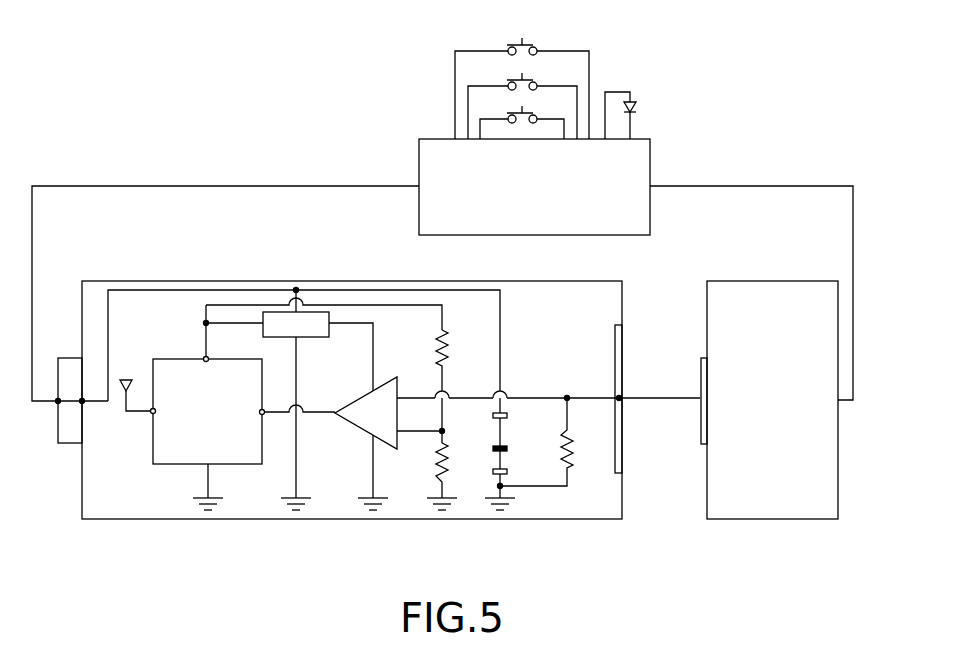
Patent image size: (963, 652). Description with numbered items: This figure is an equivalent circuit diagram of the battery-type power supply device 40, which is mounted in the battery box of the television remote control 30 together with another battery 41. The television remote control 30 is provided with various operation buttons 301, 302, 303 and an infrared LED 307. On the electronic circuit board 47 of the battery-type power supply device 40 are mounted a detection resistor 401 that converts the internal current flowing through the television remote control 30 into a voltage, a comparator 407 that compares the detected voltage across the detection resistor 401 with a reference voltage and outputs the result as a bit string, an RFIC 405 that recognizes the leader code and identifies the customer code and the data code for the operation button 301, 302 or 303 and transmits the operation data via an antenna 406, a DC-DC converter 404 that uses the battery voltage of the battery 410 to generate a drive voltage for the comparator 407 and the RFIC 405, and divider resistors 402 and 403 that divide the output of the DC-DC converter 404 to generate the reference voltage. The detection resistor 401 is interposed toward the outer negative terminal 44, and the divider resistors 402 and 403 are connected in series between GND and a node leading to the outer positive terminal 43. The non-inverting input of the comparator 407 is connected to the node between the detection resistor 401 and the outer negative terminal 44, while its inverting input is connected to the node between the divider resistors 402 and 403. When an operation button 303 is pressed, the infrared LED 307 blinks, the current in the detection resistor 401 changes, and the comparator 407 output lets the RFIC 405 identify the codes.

The television remote control 30 is at (420, 131).
The operation button 301 is at (536, 44).
The operation button 302 is at (536, 79).
The operation button 303 is at (536, 112).
The infrared LED 307 is at (636, 100).
The battery-type power supply device 40 is at (247, 528).
The battery 41 is at (793, 281).
The outer positive terminal 43 is at (59, 358).
The outer negative terminal 44 is at (623, 453).
The electronic circuit board 47 is at (474, 281).
The detection resistor 401 is at (568, 462).
The divider resistor 402 is at (448, 340).
The divider resistor 403 is at (448, 456).
The DC-DC converter 404 is at (322, 337).
The RFIC 405 is at (187, 343).
The antenna 406 is at (128, 379).
The comparator 407 is at (391, 378).
The battery 410 is at (485, 437).